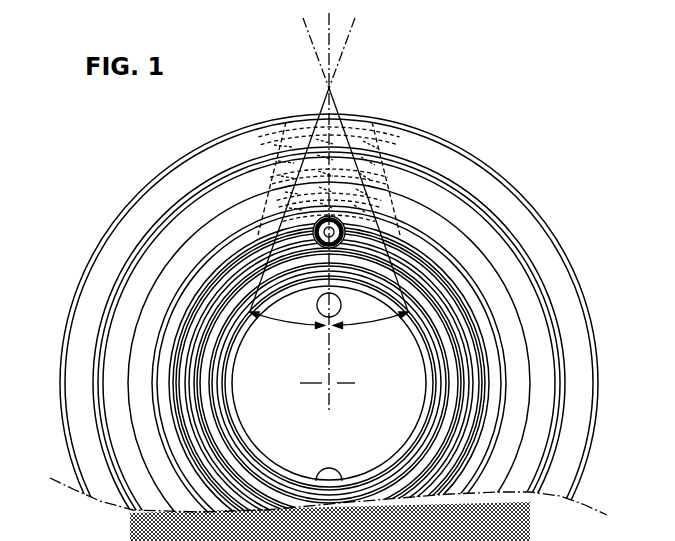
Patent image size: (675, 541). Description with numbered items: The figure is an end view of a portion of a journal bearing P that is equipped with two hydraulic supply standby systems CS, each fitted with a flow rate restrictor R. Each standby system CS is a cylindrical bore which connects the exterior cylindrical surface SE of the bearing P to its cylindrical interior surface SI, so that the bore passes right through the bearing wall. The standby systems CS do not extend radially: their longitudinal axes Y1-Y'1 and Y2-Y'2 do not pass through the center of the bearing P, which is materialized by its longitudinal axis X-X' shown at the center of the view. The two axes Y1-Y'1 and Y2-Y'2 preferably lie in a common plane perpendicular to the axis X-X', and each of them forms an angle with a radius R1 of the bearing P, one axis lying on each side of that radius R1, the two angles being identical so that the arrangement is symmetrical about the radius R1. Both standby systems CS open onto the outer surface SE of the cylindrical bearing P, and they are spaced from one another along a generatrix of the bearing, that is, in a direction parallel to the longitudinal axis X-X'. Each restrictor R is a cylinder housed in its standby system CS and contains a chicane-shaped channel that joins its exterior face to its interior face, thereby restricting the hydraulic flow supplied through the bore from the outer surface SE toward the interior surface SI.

The longitudinal axis Y1-Y'1 of the first standby system Y1 is at (306, 31).
The longitudinal axis Y2-Y'2 of the second standby system Y2 is at (353, 22).
The flow rate restrictor R is at (303, 135).
The standby system CS is at (264, 179).
The exterior cylindrical surface SE is at (488, 158).
The cylindrical interior surface SI is at (412, 346).
The bearing P is at (556, 274).
The radius of the bearing R1 is at (219, 238).
The longitudinal axis Y2-Y'2 of the second standby system Y'2 is at (173, 200).
The longitudinal axis Y1-Y'1 of the first standby system Y'1 is at (481, 200).
The longitudinal axis of the bearing X-X' is at (353, 213).